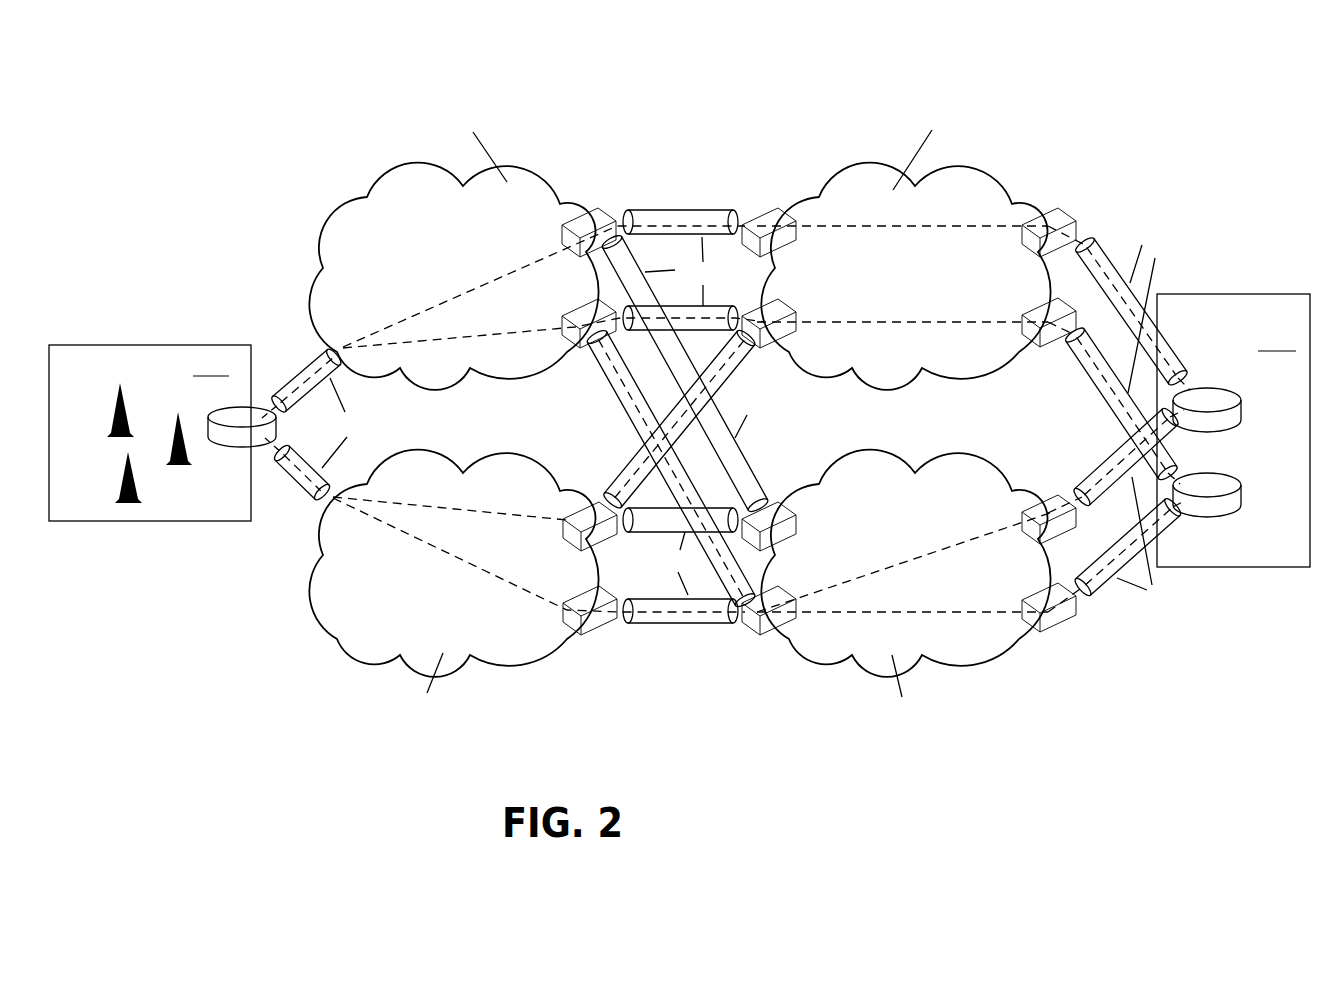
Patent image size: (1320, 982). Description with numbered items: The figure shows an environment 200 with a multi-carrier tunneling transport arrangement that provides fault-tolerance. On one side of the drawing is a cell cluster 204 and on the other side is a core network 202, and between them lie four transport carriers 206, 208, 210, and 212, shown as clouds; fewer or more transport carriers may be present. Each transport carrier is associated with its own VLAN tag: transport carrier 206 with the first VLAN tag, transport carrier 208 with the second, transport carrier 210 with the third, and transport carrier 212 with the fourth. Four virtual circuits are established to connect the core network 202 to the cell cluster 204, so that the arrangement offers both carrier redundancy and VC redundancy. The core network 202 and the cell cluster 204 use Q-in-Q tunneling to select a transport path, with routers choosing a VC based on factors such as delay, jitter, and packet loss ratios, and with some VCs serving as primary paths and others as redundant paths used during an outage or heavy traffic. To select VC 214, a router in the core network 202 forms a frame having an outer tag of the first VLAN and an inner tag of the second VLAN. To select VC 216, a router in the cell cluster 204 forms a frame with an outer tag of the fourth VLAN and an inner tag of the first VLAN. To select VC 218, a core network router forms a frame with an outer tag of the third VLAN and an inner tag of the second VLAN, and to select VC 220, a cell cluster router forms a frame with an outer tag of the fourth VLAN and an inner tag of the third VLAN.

The environment 200 is at (181, 105).
The core network 202 is at (1233, 430).
The cell cluster 204 is at (162, 433).
The transport carrier 206 is at (884, 313).
The transport carrier 208 is at (408, 270).
The transport carrier 210 is at (883, 553).
The transport carrier 212 is at (401, 646).
The VC 214 is at (940, 226).
The VC 216 is at (925, 322).
The VC 218 is at (952, 547).
The VC 220 is at (937, 612).